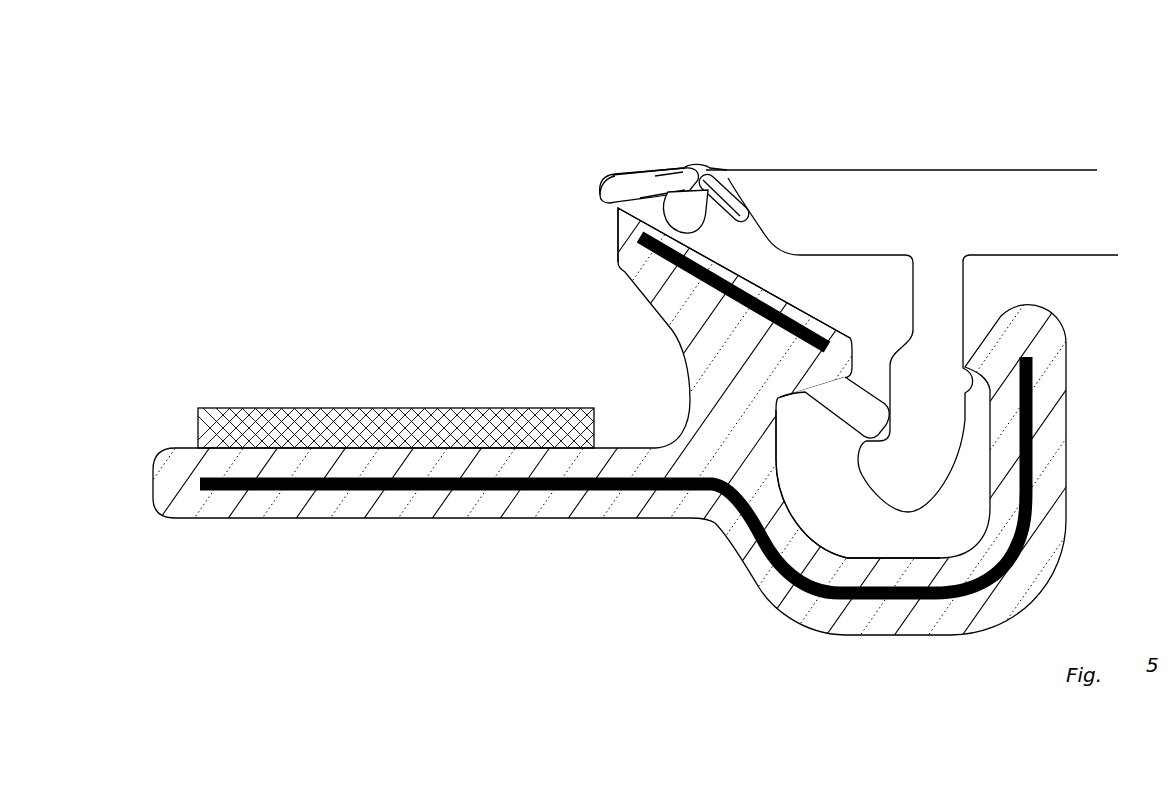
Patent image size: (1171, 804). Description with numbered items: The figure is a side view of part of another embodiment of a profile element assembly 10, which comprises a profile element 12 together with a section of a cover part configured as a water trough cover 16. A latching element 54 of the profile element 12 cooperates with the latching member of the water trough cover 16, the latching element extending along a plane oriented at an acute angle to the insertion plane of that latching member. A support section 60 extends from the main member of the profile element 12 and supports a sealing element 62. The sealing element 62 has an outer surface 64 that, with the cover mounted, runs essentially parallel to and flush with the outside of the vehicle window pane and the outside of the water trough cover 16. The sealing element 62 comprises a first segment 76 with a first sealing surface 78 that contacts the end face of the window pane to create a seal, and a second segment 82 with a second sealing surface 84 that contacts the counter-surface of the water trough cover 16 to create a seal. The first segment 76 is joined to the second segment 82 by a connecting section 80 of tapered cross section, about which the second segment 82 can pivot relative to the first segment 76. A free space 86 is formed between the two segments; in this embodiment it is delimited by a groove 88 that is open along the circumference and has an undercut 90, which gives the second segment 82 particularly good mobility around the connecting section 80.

The profile element assembly 10 is at (518, 562).
The profile element 12 is at (690, 545).
The water trough cover 16 is at (1007, 143).
The latching element 54 is at (835, 427).
The support section 60 is at (632, 260).
The sealing element 62 is at (674, 138).
The outer surface 64 is at (633, 167).
The first segment 76 is at (620, 177).
The first sealing surface 78 is at (597, 195).
The connecting section 80 is at (675, 170).
The second segment 82 is at (727, 200).
The second sealing surface 84 is at (717, 166).
The free space 86 is at (703, 229).
The groove 88 is at (695, 172).
The undercut 90 is at (718, 210).